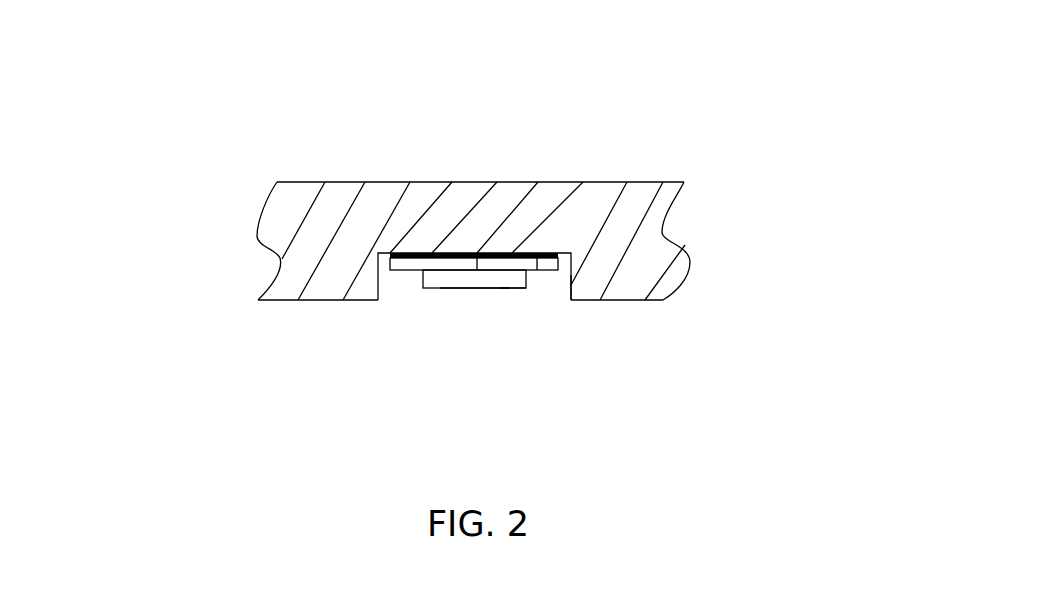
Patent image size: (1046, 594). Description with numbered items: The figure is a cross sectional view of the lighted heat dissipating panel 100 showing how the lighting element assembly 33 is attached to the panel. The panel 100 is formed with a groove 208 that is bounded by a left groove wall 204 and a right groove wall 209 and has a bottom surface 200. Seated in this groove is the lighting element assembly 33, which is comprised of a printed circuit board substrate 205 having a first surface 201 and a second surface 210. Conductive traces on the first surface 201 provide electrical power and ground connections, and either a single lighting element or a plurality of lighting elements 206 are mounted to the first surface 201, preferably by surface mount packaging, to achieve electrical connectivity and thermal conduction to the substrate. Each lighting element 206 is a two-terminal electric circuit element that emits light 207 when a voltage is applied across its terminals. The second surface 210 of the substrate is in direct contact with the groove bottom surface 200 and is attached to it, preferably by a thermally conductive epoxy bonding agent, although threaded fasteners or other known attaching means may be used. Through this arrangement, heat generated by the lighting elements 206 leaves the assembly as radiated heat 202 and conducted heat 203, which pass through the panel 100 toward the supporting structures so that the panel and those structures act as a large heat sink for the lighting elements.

The lighted heat dissipating panel 100 is at (268, 192).
The bottom surface 200 is at (421, 250).
The first surface 201 is at (477, 253).
The radiated heat 202 is at (653, 179).
The conducted heat 203 is at (258, 236).
The left groove wall 204 is at (379, 294).
The printed circuit board substrate 205 is at (413, 271).
The lighting element 206 is at (452, 289).
The light 207 is at (473, 290).
The groove 208 is at (504, 291).
The right groove wall 209 is at (572, 289).
The second surface 210 is at (531, 273).
The lighting element assembly 33 is at (453, 358).